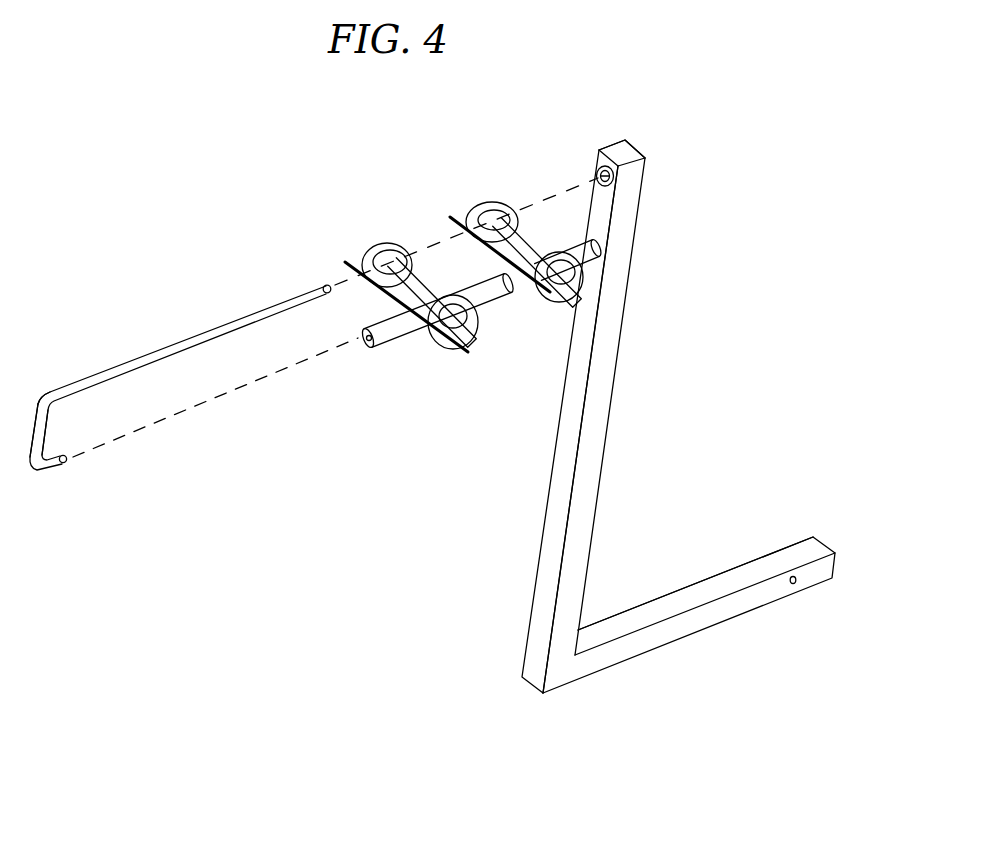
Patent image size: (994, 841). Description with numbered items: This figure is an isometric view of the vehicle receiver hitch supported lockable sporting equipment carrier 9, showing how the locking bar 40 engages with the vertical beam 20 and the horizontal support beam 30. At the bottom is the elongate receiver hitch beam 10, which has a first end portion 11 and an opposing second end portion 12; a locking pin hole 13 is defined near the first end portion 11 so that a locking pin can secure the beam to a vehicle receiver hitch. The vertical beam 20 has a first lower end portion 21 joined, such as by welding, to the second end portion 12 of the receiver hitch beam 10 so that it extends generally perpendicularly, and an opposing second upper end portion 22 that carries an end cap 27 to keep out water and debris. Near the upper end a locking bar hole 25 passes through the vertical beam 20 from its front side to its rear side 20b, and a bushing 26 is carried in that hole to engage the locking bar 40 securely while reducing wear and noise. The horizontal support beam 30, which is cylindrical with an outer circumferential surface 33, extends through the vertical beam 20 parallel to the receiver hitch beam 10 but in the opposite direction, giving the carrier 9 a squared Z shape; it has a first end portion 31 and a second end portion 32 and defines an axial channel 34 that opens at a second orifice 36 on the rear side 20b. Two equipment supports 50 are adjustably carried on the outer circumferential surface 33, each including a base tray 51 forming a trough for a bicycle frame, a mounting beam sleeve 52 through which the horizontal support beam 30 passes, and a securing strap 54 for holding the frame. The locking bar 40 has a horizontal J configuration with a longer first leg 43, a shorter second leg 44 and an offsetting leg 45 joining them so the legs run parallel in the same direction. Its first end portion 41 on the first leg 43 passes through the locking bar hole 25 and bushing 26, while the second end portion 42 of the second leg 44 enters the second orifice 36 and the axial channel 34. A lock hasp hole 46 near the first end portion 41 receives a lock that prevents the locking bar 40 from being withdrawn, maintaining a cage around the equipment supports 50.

The vehicle receiver hitch supported lockable sporting equipment carrier 9 is at (640, 130).
The receiver hitch beam 10 is at (647, 663).
The first end portion 11 is at (802, 548).
The second end portion 12 is at (588, 640).
The locking pin hole 13 is at (795, 586).
The vertical beam 20 is at (625, 415).
The rear side 20b is at (602, 218).
The first lower end portion 21 is at (540, 620).
The second upper end portion 22 is at (637, 173).
The locking bar hole 25 is at (613, 183).
The bushing 26 is at (602, 166).
The end cap 27 is at (622, 153).
The horizontal support beam 30 is at (500, 316).
The first end portion 31 is at (585, 255).
The second end portion 32 is at (395, 338).
The outer circumferential surface 33 is at (473, 290).
The axial channel 34 is at (370, 349).
The second orifice 36 is at (364, 338).
The locking bar 40 is at (163, 340).
The first end portion 41 is at (307, 293).
The second end portion 42 is at (62, 393).
The first leg 43 is at (213, 332).
The second leg 44 is at (63, 462).
The offsetting leg 45 is at (40, 433).
The lock hasp hole 46 is at (326, 286).
The equipment support 50 is at (471, 200).
The base tray 51 is at (472, 352).
The mounting beam sleeve 52 is at (402, 310).
The securing strap 54 is at (507, 203).